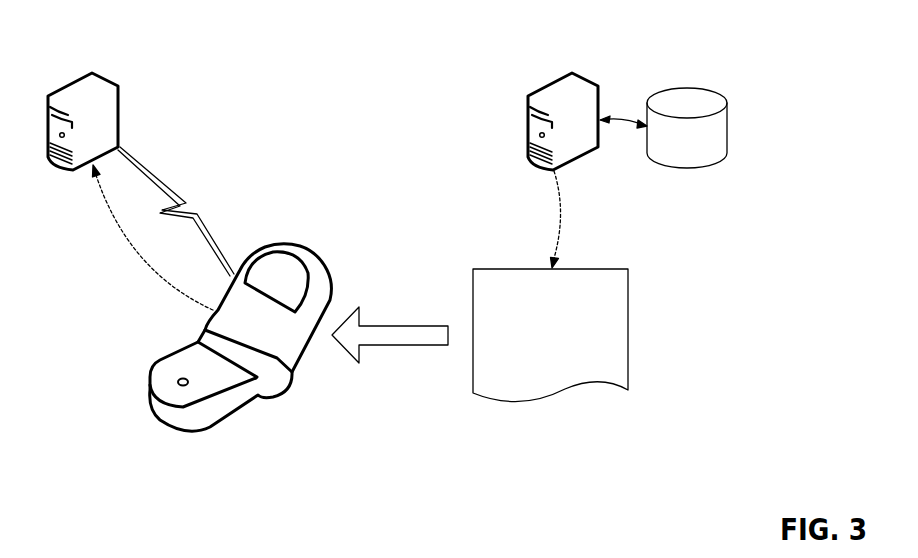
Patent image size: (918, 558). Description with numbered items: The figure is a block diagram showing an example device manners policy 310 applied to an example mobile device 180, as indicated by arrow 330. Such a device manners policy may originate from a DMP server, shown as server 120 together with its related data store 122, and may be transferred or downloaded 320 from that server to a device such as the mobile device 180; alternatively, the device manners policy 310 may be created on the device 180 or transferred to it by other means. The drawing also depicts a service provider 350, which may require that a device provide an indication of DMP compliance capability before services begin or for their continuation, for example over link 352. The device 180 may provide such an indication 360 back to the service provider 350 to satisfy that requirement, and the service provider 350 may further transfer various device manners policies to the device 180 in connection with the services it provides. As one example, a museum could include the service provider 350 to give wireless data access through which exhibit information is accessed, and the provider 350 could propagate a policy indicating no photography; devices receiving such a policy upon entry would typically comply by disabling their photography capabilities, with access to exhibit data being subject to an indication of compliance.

The service provider 350 is at (92, 73).
The link 352 is at (177, 202).
The indication 360 is at (152, 268).
The mobile device 180 is at (213, 425).
The arrow 330 is at (359, 363).
The server 120 is at (572, 73).
The data store 122 is at (705, 90).
The transfer or download 320 is at (560, 228).
The device manners policy 310 is at (550, 335).